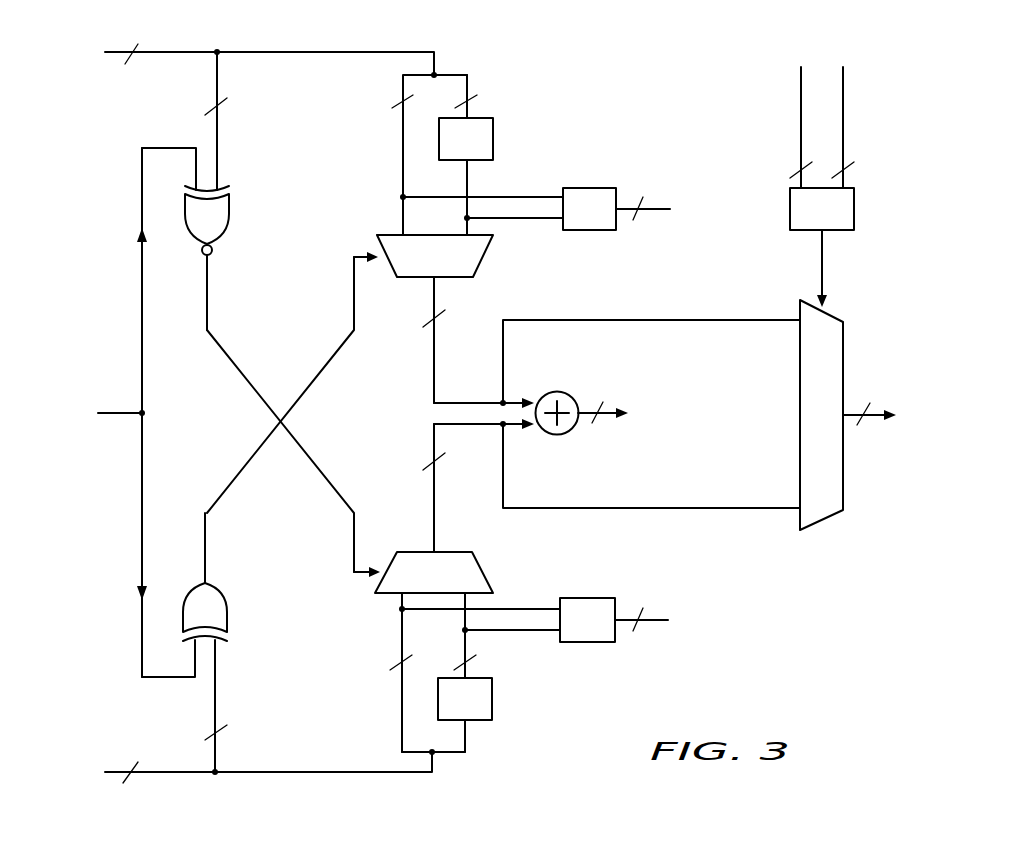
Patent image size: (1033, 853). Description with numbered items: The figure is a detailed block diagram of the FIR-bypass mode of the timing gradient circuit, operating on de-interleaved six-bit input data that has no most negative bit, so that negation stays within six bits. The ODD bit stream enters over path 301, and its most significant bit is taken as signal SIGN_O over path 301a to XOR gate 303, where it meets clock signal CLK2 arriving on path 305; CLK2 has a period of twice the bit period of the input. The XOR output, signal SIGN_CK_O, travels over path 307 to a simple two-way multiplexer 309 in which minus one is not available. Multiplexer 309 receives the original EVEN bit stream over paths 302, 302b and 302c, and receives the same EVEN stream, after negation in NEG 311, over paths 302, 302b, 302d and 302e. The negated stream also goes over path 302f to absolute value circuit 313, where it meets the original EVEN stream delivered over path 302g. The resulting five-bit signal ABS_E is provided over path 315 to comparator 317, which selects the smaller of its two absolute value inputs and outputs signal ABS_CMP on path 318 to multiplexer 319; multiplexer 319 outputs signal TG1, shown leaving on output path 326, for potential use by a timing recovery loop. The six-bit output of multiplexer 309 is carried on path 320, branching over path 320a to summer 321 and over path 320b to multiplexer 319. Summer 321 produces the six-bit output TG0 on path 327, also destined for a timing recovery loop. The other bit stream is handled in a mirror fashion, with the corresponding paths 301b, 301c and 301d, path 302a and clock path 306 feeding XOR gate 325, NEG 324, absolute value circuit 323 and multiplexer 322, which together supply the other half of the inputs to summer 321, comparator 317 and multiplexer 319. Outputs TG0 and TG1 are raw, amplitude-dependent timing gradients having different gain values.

The path 301 is at (162, 775).
The path 301a is at (217, 690).
The odd data line 301b is at (327, 775).
The odd direct line to mux 301c is at (402, 712).
The odd negated line 301d is at (467, 740).
The path 302 is at (180, 52).
The even MSB sign line 302a is at (218, 83).
The path 302b is at (326, 52).
The path 302c is at (402, 155).
The path 302d is at (455, 73).
The path 302e is at (468, 188).
The path 302f is at (523, 220).
The path 302g is at (545, 197).
The XOR gate 303 is at (230, 620).
The path 305 is at (120, 411).
The clock line 306 is at (142, 300).
The path 307 is at (316, 371).
The multiplexer 309 is at (385, 233).
The NEG 311 is at (488, 116).
The absolute value circuit 313 is at (589, 232).
The path 315 is at (653, 210).
The comparator 317 is at (857, 208).
The path 318 is at (820, 268).
The multiplexer 319 is at (818, 531).
The path 320 is at (433, 363).
The path 320a is at (458, 402).
The path 320b is at (650, 322).
The summer 321 is at (553, 391).
The multiplexer 322 is at (411, 551).
The absolute value circuit 323 is at (588, 598).
The NEG 324 is at (493, 700).
The XOR gate 325 is at (229, 207).
The TG1 output line 326 is at (868, 422).
The path 327 is at (628, 445).